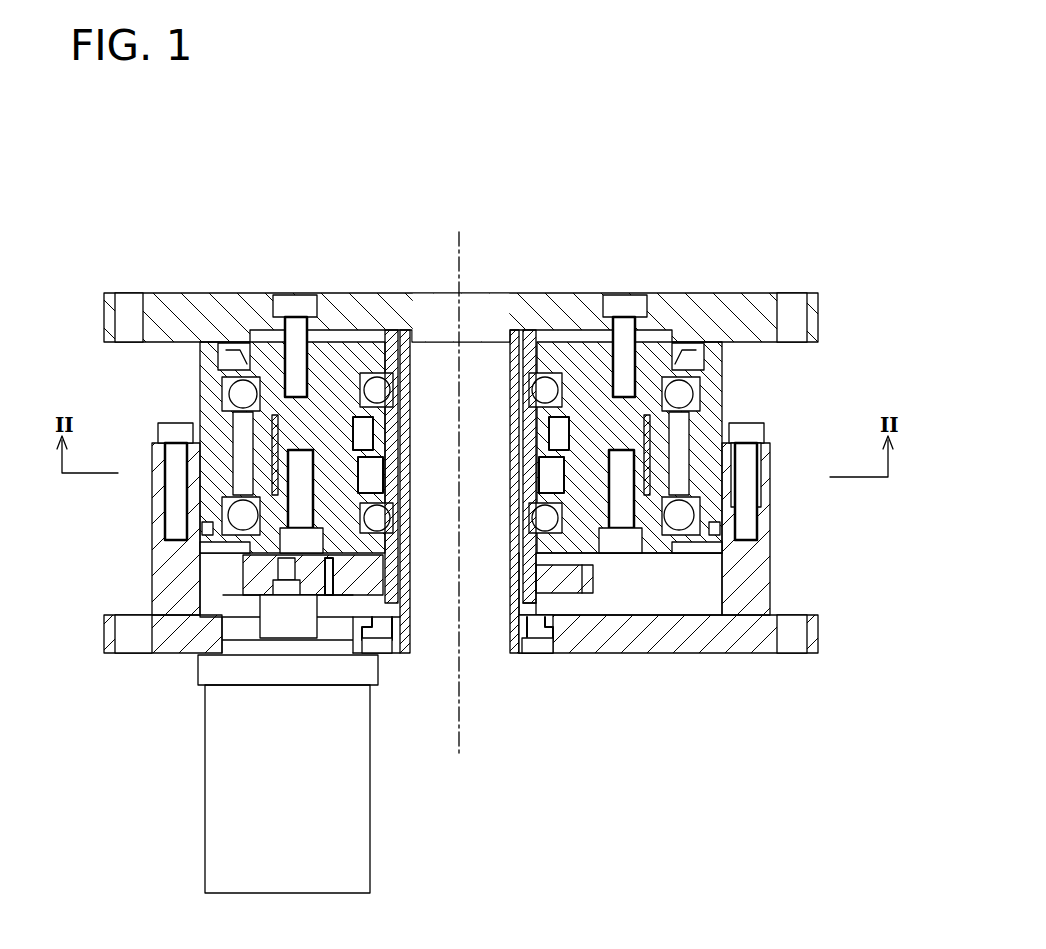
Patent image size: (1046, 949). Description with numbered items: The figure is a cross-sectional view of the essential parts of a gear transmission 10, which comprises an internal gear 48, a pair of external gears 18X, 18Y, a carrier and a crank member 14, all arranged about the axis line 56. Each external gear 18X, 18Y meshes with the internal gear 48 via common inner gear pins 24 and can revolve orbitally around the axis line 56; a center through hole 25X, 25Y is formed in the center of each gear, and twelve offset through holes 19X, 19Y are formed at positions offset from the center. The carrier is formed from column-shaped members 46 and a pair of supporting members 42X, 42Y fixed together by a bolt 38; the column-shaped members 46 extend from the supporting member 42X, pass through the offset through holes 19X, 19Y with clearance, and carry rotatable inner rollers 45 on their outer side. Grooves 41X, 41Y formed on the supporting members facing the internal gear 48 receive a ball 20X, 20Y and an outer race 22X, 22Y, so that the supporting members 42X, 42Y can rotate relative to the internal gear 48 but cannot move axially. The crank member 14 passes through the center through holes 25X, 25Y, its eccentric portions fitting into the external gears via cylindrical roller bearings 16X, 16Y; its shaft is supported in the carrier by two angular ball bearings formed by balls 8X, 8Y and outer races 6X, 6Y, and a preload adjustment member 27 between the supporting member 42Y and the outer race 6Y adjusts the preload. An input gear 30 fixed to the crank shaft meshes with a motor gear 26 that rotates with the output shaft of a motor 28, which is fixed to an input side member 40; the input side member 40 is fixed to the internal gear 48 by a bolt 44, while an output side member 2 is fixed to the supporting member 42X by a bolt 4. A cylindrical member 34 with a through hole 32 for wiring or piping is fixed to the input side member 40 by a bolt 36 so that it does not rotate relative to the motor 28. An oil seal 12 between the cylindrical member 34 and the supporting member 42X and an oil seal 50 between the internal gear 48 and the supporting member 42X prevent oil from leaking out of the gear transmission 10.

The output side member 2 is at (725, 318).
The bolt 4 is at (630, 318).
The outer race 6X is at (550, 455).
The outer race 6Y is at (655, 598).
The balls 8X is at (545, 375).
The balls 8Y is at (615, 580).
The gear transmission 10 is at (680, 212).
The oil seal 12 is at (520, 380).
The crank member 14 is at (407, 400).
The cylindrical roller bearings 16X is at (335, 395).
The cylindrical roller bearings 16Y is at (318, 470).
The external gear 18X is at (288, 330).
The external gear 18Y is at (355, 425).
The offset through holes 19X is at (245, 411).
The offset through holes 19Y is at (350, 490).
The ball 20X is at (235, 385).
The ball 20Y is at (238, 503).
The outer race 22X is at (240, 405).
The outer race 22Y is at (243, 525).
The inner gear pins 24 is at (200, 455).
The center through hole 25X is at (568, 440).
The center through hole 25Y is at (558, 420).
The motor gear 26 is at (262, 585).
The preload adjustment member 27 is at (215, 622).
The motor 28 is at (232, 737).
The input gear 30 is at (381, 654).
The through hole 32 is at (505, 603).
The cylindrical member 34 is at (530, 648).
The bolt 36 is at (540, 652).
The bolt 38 is at (700, 597).
The input side member 40 is at (745, 570).
The groove 41X is at (232, 345).
The groove 41Y is at (240, 553).
The supporting member 42X is at (693, 393).
The supporting member 42Y is at (702, 537).
The bolt 44 is at (745, 498).
The inner rollers 45 is at (757, 452).
The column-shaped members 46 is at (760, 432).
The internal gear 48 is at (712, 398).
The oil seal 50 is at (693, 358).
The axis line 56 is at (458, 509).